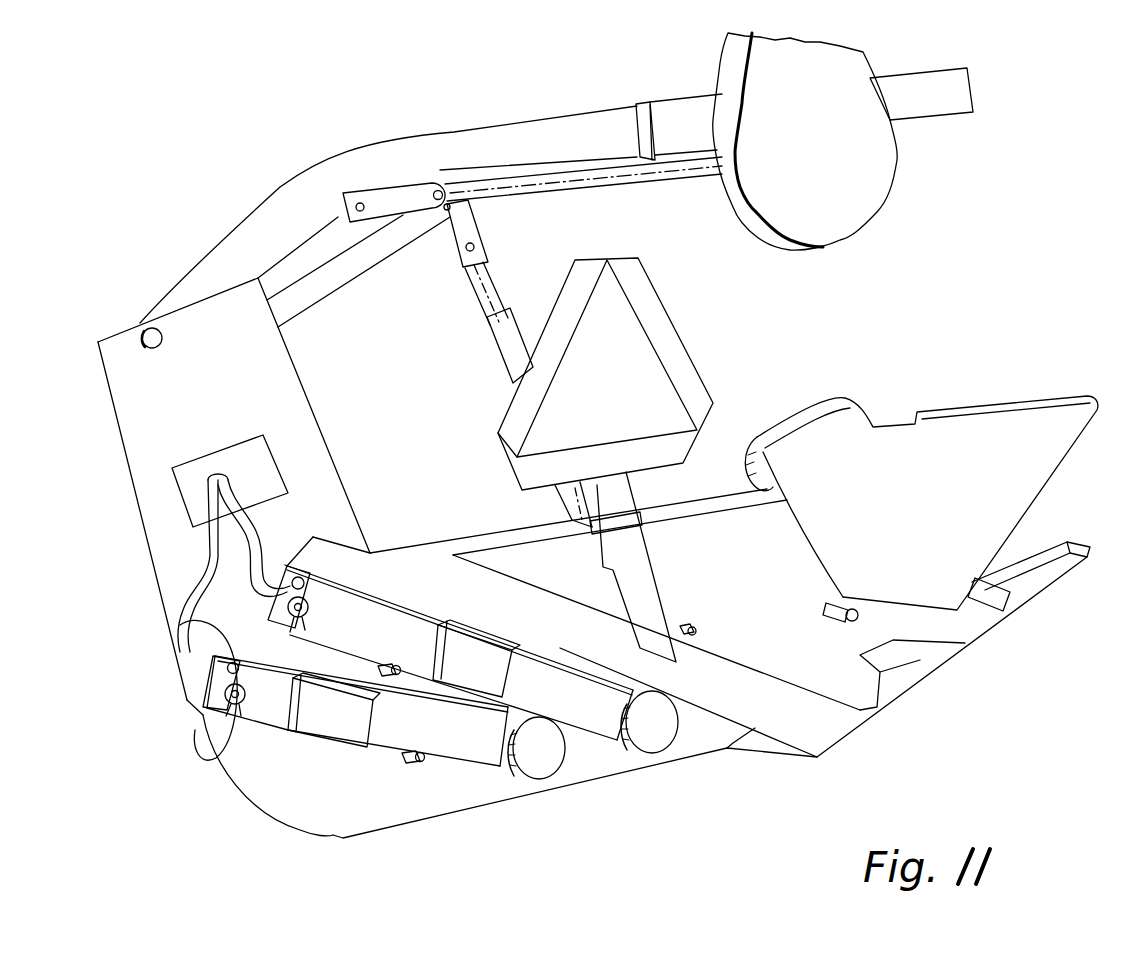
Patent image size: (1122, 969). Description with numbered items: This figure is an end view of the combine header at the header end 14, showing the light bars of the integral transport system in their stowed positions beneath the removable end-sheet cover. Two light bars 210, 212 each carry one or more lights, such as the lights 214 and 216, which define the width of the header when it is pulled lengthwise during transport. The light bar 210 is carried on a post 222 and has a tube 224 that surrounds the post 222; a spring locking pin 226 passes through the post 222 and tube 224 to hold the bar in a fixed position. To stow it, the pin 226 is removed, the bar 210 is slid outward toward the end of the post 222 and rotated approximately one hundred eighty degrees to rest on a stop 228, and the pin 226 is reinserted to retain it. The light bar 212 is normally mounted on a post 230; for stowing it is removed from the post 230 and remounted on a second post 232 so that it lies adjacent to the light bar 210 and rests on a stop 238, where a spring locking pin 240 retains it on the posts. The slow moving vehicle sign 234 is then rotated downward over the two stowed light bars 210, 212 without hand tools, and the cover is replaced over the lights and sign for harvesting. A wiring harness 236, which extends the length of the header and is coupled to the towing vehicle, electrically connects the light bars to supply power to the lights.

The header end 14 is at (445, 803).
The light bar 210 is at (373, 750).
The light bar 212 is at (390, 625).
The light 214 is at (512, 673).
The light 216 is at (676, 742).
The post 222 is at (207, 688).
The tube 224 is at (227, 757).
The spring locking pin 226 is at (180, 624).
The stop 228 is at (410, 765).
The post 230 is at (850, 607).
The second post 232 is at (307, 610).
The slow moving vehicle sign 234 is at (677, 333).
The wiring harness 236 is at (228, 487).
The stop 238 is at (400, 676).
The spring locking pin 240 is at (297, 563).